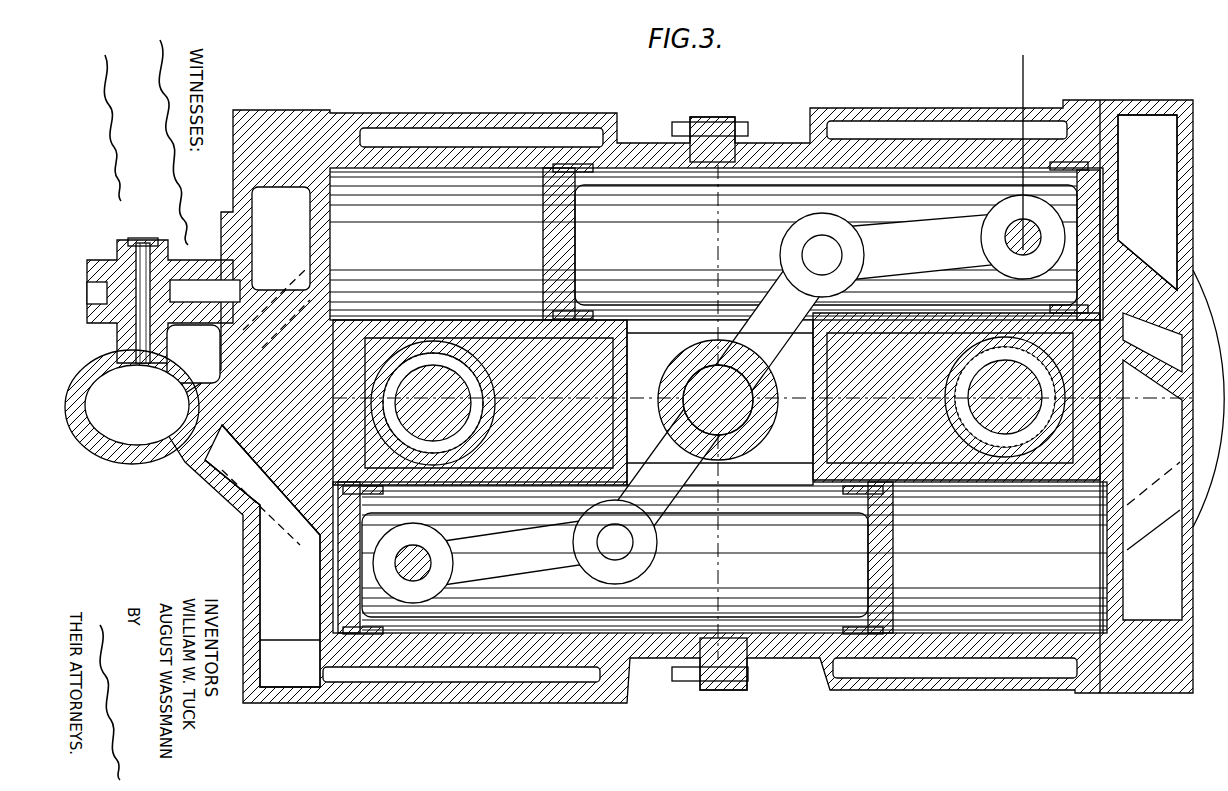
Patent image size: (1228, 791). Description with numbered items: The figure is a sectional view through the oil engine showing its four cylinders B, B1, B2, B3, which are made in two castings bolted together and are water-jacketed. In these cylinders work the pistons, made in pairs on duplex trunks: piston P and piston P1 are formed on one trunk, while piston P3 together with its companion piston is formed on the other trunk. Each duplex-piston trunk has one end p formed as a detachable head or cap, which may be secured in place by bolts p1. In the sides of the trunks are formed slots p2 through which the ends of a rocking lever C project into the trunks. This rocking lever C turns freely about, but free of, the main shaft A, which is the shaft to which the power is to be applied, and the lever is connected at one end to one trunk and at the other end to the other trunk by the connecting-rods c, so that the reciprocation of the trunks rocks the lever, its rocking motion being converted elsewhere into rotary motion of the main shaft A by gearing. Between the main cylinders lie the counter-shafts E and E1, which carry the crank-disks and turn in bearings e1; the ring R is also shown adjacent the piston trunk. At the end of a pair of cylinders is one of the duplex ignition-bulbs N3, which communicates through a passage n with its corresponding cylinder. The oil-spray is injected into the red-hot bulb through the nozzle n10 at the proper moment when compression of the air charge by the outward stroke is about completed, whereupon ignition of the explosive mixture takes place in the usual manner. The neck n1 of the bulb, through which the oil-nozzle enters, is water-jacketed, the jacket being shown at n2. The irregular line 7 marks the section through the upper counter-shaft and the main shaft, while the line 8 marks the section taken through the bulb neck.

The cylinder B is at (703, 244).
The cylinder B1 is at (1103, 203).
The cylinder B2 is at (734, 557).
The cylinder B3 is at (335, 578).
The piston P is at (821, 241).
The piston P1 is at (1024, 167).
The piston P3 is at (615, 558).
The detachable head p is at (405, 610).
The bolts p1 is at (697, 500).
The slots p2 is at (718, 398).
The rocking lever C is at (718, 398).
The connecting-rods c is at (725, 399).
The main shaft A is at (718, 400).
The counter-shaft E is at (455, 420).
The counter-shaft E1 is at (1040, 432).
The bearings e1 is at (470, 390).
The ring R is at (1048, 292).
The ignition-bulb N3 is at (132, 407).
The passage n is at (262, 480).
The neck n1 is at (128, 338).
The water-jacket n2 is at (163, 300).
The nozzle n10 is at (160, 338).
The section line 7 7 is at (1023, 75).
The section line 8 8 is at (297, 237).